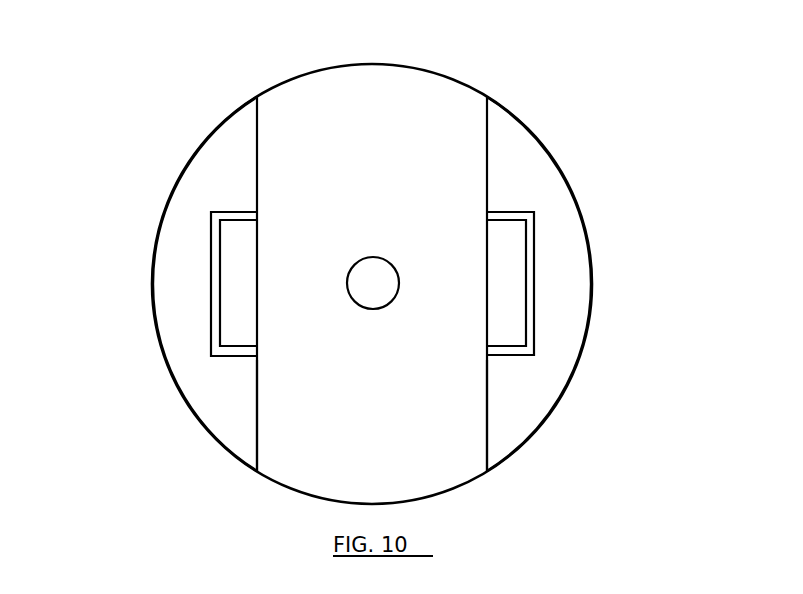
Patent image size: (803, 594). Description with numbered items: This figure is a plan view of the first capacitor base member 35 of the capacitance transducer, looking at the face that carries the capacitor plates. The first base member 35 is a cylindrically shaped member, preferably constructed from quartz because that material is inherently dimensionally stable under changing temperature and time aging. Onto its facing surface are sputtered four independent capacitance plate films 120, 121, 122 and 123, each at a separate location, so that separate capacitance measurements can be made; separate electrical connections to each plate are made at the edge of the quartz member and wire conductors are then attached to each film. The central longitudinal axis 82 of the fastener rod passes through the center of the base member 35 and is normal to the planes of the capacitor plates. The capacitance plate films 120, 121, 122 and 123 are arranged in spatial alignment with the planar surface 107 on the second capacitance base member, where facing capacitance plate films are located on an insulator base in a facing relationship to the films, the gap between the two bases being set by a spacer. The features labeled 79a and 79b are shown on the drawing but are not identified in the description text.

The first vertical capacitor plate base member 35 is at (500, 98).
The inwardly facing planar surface 107 is at (401, 408).
The central longitudinal axis 82 is at (378, 283).
The capacitance plate film 120 is at (502, 233).
The capacitance plate film 121 is at (570, 263).
The capacitance plate film 122 is at (177, 282).
The capacitance plate film 123 is at (235, 230).
The first flat side 79a is at (228, 417).
The second flat side 79b is at (502, 432).